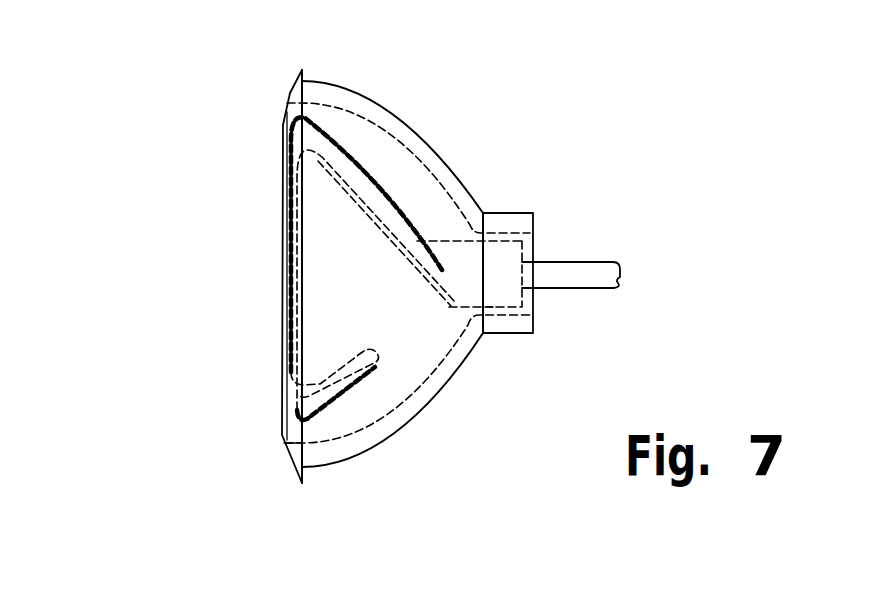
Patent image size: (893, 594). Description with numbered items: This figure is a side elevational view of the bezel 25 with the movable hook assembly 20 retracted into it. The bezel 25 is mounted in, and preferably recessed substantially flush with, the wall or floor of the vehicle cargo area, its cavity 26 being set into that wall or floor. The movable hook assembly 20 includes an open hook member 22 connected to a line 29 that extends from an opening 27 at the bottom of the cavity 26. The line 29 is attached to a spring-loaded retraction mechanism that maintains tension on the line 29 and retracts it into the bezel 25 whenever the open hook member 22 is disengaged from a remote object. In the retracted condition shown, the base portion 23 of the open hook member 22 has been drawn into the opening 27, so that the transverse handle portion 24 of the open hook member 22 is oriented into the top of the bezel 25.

The movable hook assembly 20 is at (212, 180).
The open hook member 22 is at (388, 198).
The base portion 23 is at (466, 252).
The transverse handle portion 24 is at (283, 295).
The bezel 25 is at (300, 92).
The cavity 26 is at (352, 133).
The opening 27 is at (534, 243).
The line 29 is at (583, 288).